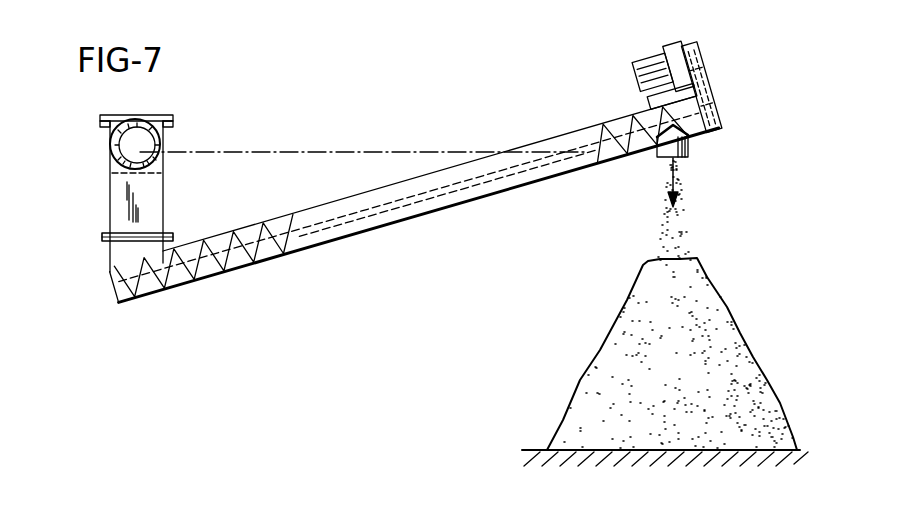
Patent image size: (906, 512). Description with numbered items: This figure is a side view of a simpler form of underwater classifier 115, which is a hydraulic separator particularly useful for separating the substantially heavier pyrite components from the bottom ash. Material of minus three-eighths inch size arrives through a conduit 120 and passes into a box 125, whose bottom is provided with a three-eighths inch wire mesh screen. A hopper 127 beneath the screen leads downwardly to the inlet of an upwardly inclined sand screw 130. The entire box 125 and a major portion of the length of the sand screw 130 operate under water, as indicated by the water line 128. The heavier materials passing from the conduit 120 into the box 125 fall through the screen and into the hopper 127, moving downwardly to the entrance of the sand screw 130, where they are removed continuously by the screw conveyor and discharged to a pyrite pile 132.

The underwater classifier 115 is at (224, 223).
The conduit 120 is at (142, 152).
The box 125 is at (119, 114).
The hopper 127 is at (117, 203).
The water line 128 is at (536, 152).
The sand screw 130 is at (335, 208).
The pyrite pile 132 is at (597, 373).